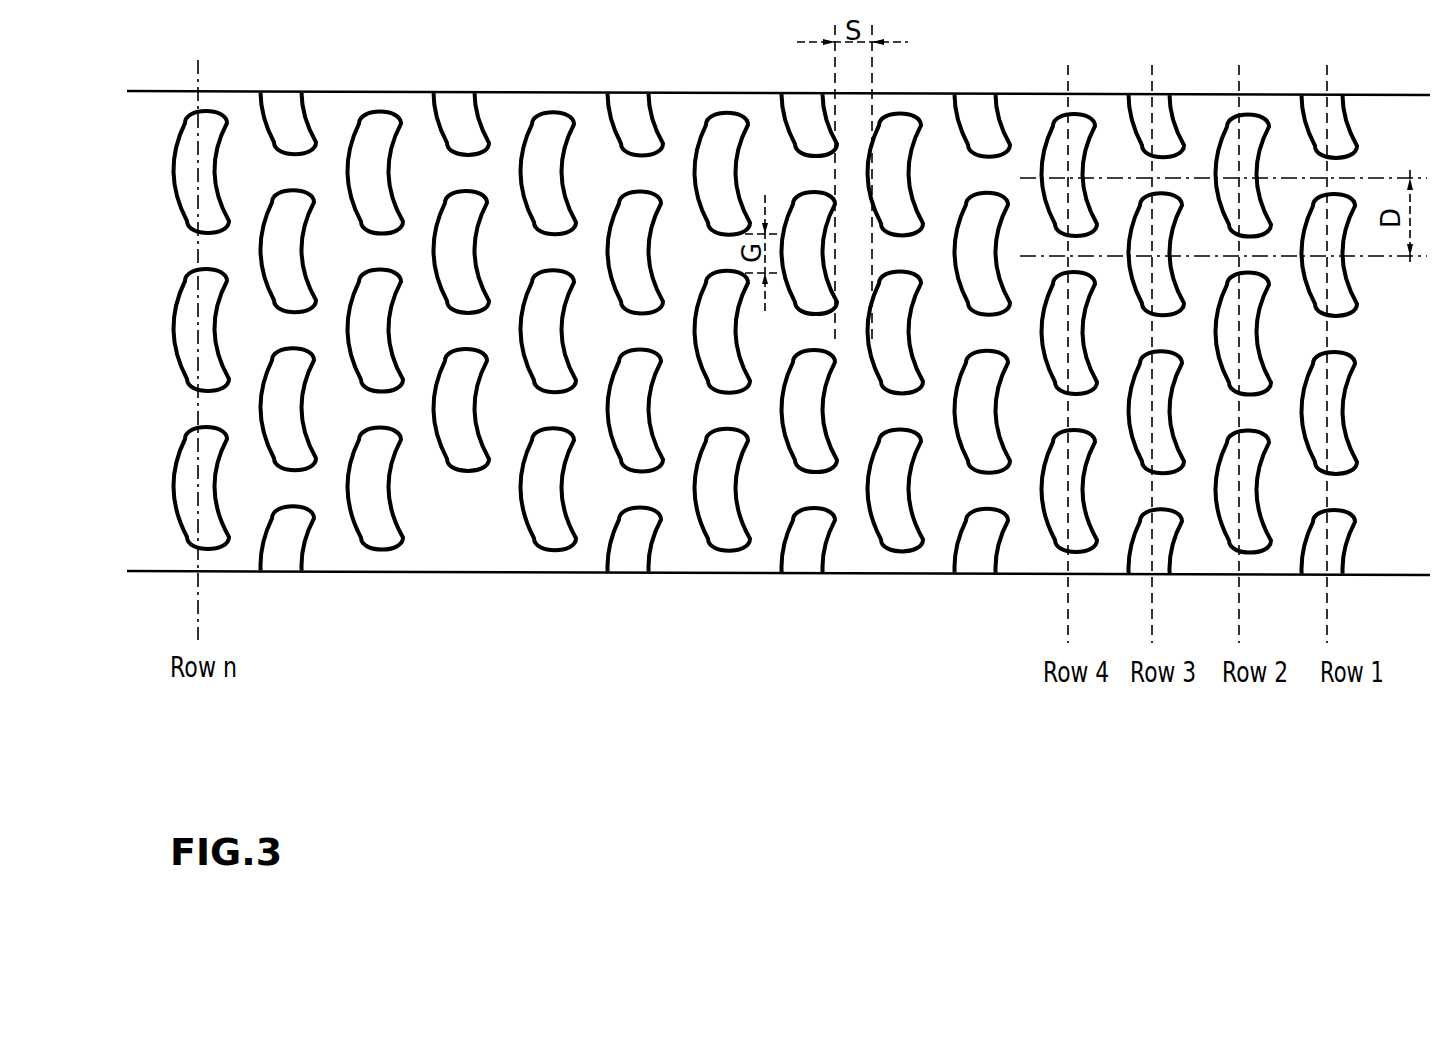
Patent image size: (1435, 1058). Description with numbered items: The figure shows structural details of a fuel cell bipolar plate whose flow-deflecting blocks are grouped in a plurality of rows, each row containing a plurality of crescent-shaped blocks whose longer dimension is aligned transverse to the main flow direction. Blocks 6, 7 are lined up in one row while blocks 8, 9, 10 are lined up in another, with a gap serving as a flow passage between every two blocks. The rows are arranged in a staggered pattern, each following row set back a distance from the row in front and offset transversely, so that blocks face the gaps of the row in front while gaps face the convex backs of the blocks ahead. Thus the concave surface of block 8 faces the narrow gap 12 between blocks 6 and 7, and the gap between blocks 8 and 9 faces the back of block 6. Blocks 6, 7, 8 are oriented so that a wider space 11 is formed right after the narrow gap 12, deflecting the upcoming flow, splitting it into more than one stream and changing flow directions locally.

The block 6 is at (545, 365).
The block 7 is at (548, 518).
The block 8 is at (460, 442).
The block 9 is at (458, 258).
The block 10 is at (463, 545).
The wider space 11 is at (508, 420).
The gap 12 is at (557, 405).